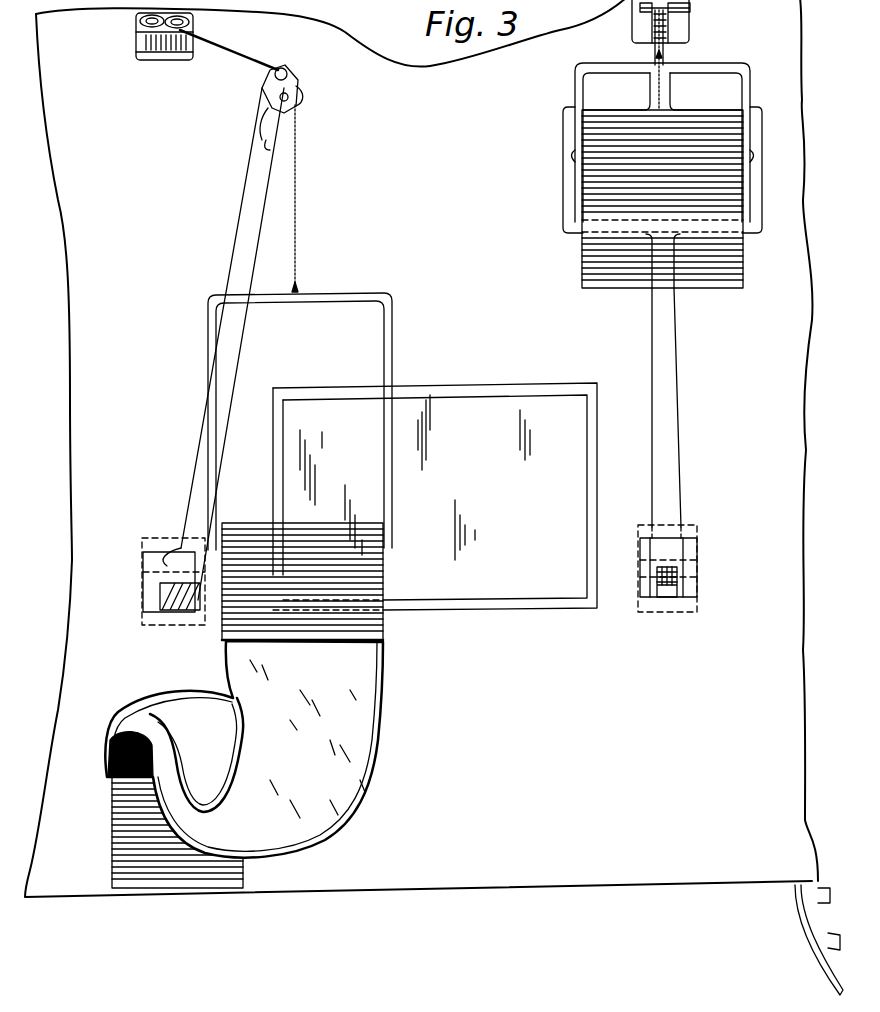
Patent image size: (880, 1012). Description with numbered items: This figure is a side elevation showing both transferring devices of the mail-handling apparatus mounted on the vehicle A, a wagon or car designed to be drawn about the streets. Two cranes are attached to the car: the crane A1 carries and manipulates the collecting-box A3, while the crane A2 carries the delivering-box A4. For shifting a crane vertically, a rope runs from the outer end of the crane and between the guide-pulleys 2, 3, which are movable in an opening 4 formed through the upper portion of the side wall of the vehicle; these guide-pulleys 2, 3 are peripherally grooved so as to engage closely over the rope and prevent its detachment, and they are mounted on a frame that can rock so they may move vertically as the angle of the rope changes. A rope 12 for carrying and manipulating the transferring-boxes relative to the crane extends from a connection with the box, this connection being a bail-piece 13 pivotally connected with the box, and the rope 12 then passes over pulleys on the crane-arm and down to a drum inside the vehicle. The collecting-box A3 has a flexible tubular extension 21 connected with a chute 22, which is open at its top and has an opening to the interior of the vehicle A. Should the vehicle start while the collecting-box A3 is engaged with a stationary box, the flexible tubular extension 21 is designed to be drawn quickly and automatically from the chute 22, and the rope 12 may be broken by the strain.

The guide-pulley 2 is at (145, 22).
The guide-pulley 3 is at (188, 28).
The opening 4 is at (138, 45).
The rope 12 is at (304, 206).
The bail-piece 13 is at (397, 343).
The vehicle A is at (482, 548).
The crane A1 is at (242, 218).
The crane A2 is at (678, 343).
The collecting-box A3 is at (385, 623).
The delivering-box A4 is at (590, 257).
The flexible tubular extension 21 is at (372, 748).
The chute 22 is at (111, 846).